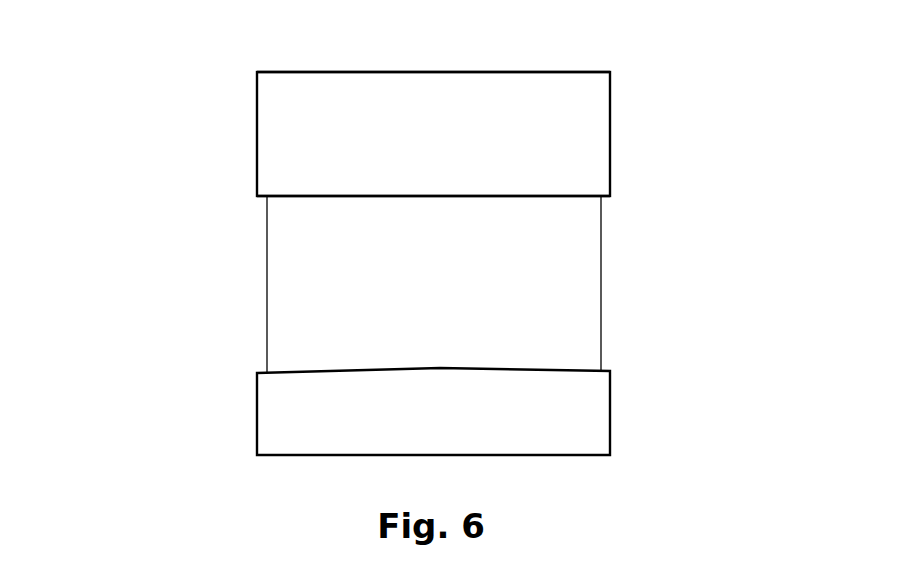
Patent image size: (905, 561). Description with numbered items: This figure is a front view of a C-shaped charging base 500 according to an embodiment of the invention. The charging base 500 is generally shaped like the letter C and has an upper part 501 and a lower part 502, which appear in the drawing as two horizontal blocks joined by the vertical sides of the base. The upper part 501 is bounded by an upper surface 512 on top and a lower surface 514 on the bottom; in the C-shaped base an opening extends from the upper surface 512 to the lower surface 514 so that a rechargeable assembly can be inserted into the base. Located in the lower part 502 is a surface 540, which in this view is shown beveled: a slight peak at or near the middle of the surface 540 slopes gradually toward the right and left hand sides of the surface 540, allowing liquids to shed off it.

The charging base 500 is at (158, 142).
The upper part 501 is at (433, 134).
The lower part 502 is at (433, 411).
The upper surface 512 is at (558, 70).
The lower surface 514 is at (559, 200).
The surface 540 is at (530, 368).